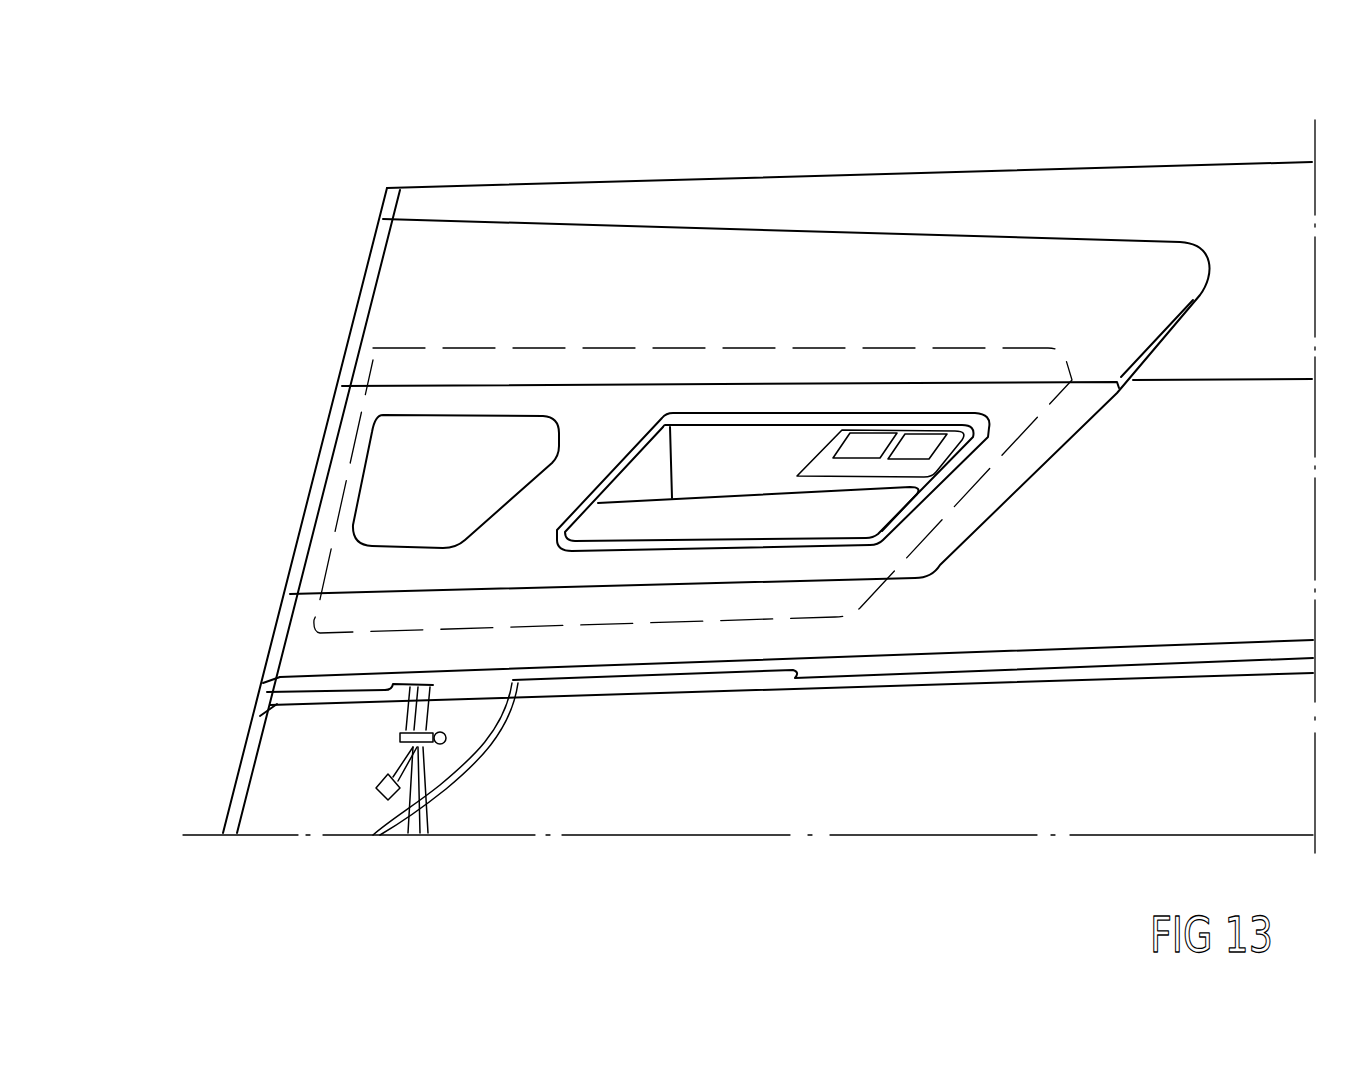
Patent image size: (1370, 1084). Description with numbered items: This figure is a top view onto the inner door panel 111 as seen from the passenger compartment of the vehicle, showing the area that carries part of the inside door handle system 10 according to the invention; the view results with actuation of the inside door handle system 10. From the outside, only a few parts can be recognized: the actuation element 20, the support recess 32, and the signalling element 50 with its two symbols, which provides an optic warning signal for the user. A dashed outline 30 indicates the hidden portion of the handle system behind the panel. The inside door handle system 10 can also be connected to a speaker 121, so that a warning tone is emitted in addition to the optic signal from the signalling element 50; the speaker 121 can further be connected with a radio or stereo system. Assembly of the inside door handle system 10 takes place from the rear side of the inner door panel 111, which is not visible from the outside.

The inside door handle system 10 is at (769, 328).
The actuation element 20 is at (853, 512).
The carrier frame 30 is at (487, 347).
The support recess 32 is at (724, 432).
The signalling element 50 is at (902, 433).
The inner door panel 111 is at (1058, 190).
The speaker 121 is at (413, 473).